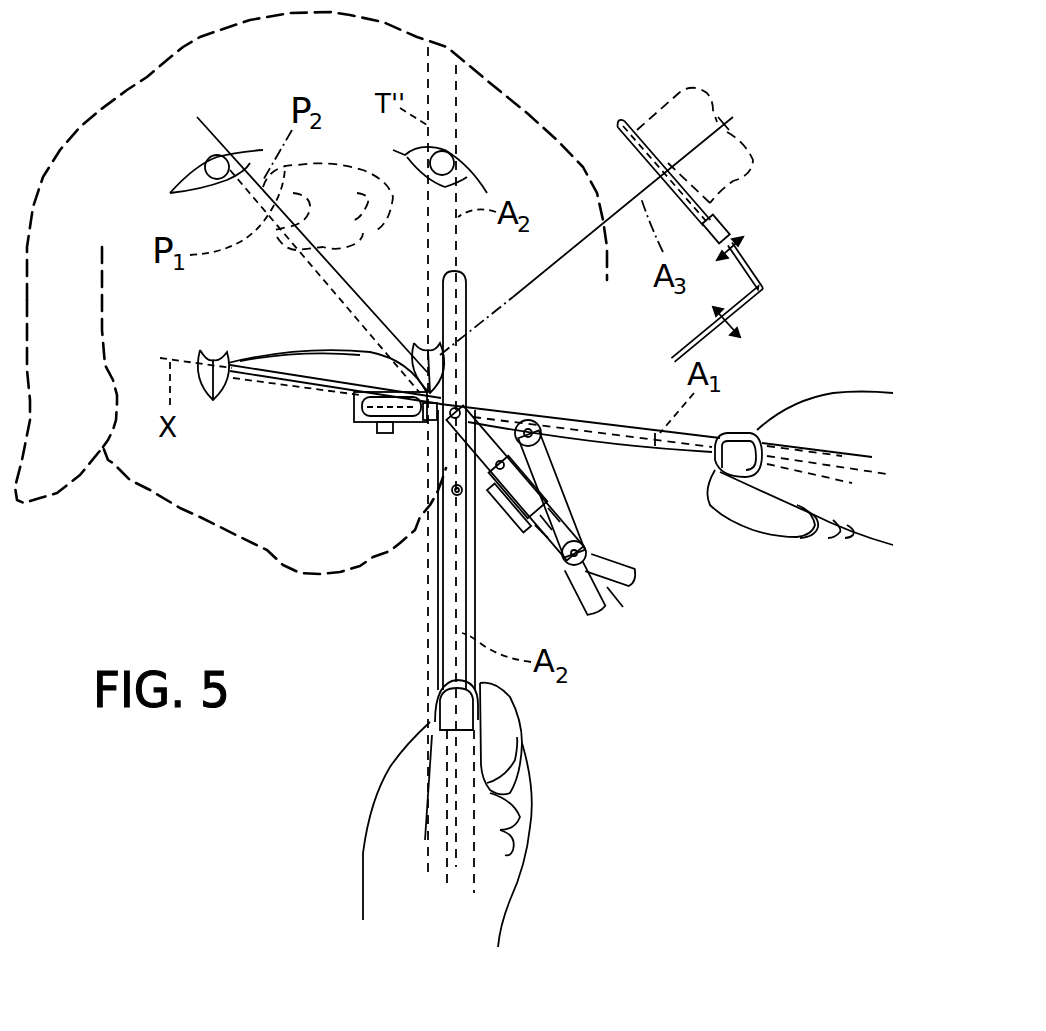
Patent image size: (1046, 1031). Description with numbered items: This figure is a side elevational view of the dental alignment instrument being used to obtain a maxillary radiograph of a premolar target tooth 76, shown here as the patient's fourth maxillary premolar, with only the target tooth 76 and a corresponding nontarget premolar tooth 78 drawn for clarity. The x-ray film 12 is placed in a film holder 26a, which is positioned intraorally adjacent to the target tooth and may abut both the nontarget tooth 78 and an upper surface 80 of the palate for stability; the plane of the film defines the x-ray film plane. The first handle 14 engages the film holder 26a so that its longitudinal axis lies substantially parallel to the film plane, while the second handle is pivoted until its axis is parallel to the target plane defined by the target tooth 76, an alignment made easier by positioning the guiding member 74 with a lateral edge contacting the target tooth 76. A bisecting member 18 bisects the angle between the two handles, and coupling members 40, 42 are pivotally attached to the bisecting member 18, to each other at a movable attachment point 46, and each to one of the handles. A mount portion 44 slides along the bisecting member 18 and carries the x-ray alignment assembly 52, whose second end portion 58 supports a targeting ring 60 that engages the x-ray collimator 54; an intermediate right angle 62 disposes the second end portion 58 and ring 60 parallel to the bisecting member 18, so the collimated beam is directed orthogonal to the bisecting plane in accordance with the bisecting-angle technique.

The x-ray film 12 is at (292, 370).
The first handle 14 is at (570, 415).
The bisecting member 18 is at (577, 517).
The film holder 26a is at (290, 382).
The coupling member 40 is at (520, 537).
The coupling member 42 is at (570, 472).
The mount portion 44 is at (493, 483).
The movable attachment point 46 is at (572, 567).
The x-ray alignment assembly 52 is at (764, 309).
The x-ray collimator 54 is at (667, 102).
The second end portion 58 is at (746, 262).
The targeting ring 60 is at (630, 120).
The intermediate right angle 62 is at (766, 293).
The guiding member 74 is at (461, 287).
The premolar target tooth 76 is at (420, 347).
The nontarget premolar tooth 78 is at (205, 357).
The upper surface of the palate 80 is at (270, 360).